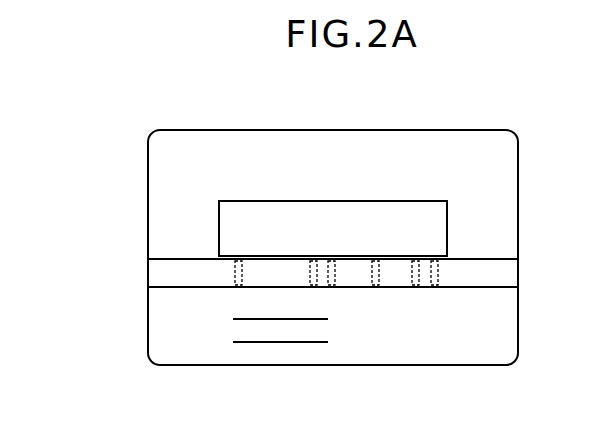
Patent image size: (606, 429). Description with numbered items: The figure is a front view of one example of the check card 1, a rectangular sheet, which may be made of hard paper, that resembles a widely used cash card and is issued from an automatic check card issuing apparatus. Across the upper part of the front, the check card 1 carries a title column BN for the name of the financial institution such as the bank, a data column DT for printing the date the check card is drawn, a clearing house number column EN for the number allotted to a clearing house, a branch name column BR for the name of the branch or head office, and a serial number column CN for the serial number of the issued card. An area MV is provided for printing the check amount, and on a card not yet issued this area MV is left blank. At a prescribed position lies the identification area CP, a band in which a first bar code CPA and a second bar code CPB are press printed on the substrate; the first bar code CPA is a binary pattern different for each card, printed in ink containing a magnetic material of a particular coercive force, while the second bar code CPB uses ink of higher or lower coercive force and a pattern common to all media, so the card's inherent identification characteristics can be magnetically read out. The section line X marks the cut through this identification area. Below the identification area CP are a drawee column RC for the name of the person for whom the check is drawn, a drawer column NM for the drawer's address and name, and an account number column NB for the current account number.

The check card 1 is at (393, 126).
The title column BN is at (172, 143).
The data column DT is at (165, 175).
The clearing house number column EN is at (510, 137).
The branch name column BR is at (500, 169).
The serial number column CN is at (510, 191).
The area for printing the check amount MV is at (438, 243).
The identification area CP is at (142, 264).
The section line X- X is at (578, 274).
The second bar code CPB is at (240, 289).
The first bar code CPA is at (438, 290).
The drawee column RC is at (215, 347).
The drawer column NM is at (528, 295).
The account number column NB is at (377, 358).